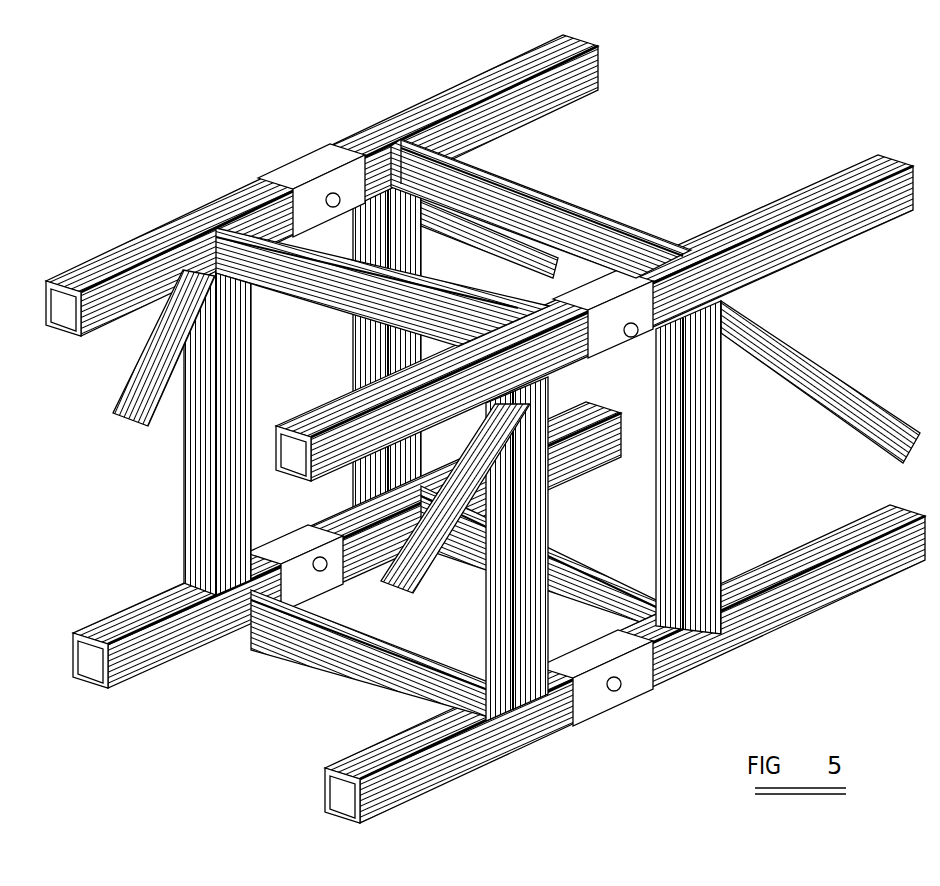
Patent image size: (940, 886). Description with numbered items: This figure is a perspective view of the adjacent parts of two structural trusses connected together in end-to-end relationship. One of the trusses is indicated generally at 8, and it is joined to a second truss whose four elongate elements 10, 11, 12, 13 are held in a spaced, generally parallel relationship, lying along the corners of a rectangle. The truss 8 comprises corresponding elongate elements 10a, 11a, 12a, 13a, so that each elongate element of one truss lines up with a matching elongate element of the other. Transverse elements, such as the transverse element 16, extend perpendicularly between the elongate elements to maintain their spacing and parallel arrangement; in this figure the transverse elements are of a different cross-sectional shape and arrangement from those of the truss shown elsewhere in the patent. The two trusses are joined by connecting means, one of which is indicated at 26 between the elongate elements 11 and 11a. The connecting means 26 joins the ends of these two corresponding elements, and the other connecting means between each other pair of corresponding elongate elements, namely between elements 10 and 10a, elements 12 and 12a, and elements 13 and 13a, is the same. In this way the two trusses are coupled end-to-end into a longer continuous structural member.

The truss 8 is at (470, 418).
The elongate element 10 is at (435, 62).
The elongate element 10a is at (97, 285).
The elongate element 11 is at (825, 198).
The elongate element 11a is at (332, 408).
The elongate element 12 is at (810, 588).
The elongate element 12a is at (440, 758).
The elongate element 13 is at (568, 456).
The elongate element 13a is at (145, 635).
The transverse element 16 is at (270, 268).
The connecting means 26 is at (612, 352).